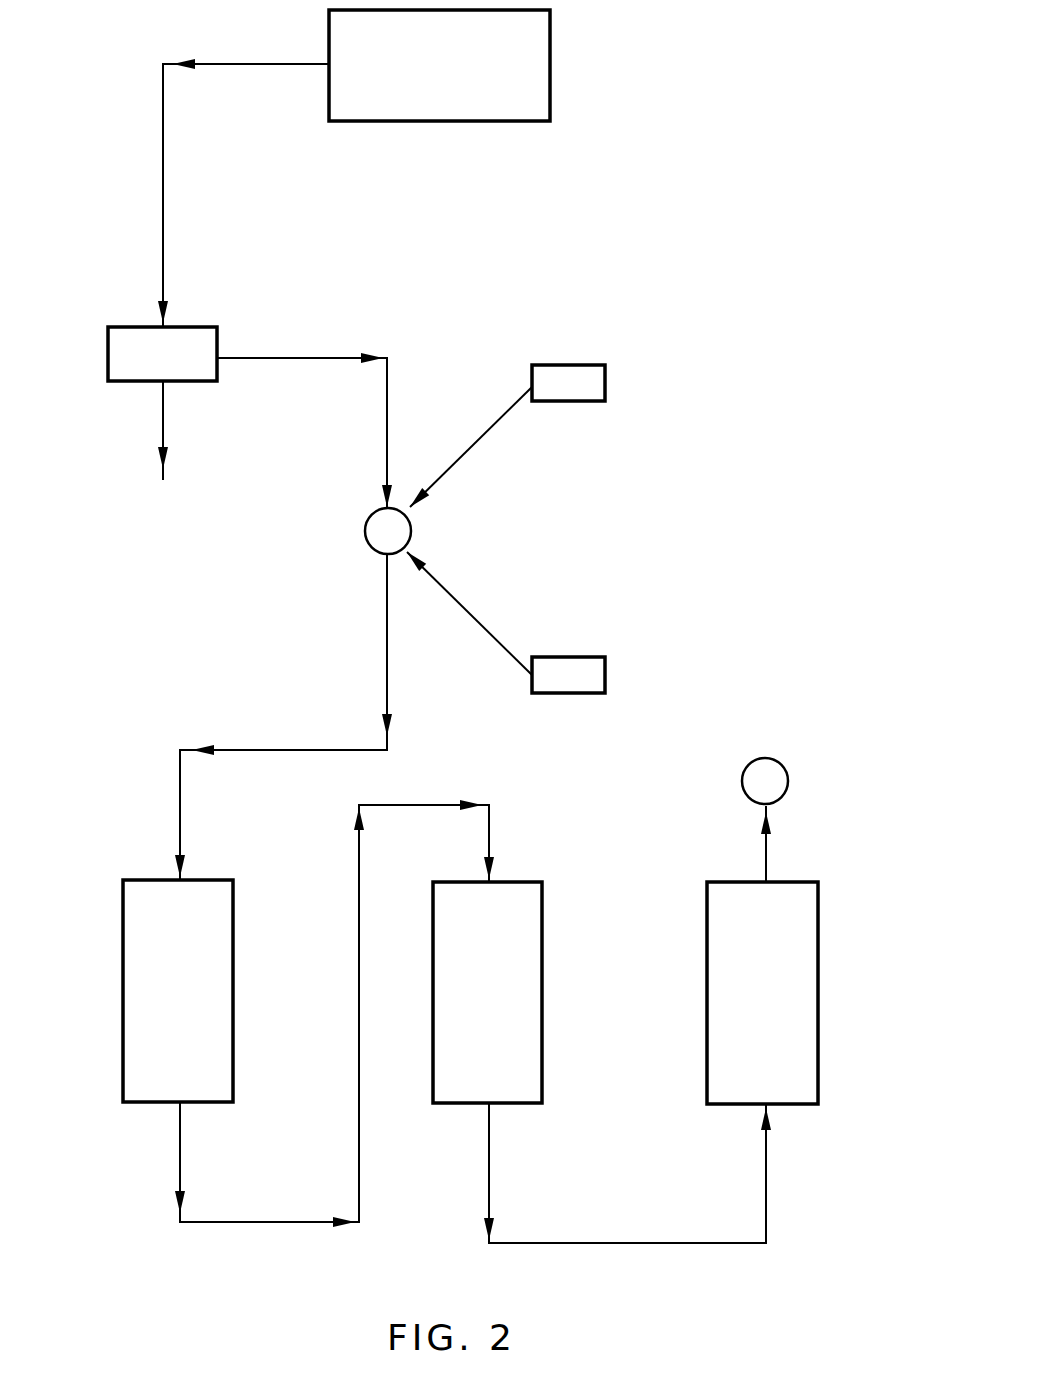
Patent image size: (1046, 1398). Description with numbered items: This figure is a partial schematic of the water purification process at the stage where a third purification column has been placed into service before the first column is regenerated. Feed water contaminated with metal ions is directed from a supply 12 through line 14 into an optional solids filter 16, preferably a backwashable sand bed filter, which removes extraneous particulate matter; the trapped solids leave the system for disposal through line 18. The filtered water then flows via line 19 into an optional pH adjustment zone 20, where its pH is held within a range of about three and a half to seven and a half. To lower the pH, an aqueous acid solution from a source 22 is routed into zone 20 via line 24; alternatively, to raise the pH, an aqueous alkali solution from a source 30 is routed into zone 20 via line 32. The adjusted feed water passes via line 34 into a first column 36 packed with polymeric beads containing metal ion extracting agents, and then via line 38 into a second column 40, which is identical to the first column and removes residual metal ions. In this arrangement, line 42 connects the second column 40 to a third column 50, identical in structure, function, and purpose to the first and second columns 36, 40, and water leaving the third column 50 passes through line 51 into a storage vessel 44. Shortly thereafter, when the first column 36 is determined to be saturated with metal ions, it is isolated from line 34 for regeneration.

The supply 12 is at (541, 18).
The line 14 is at (162, 118).
The solids filter 16 is at (197, 336).
The line 18 is at (165, 425).
The line 19 is at (389, 388).
The pH adjustment zone 20 is at (368, 532).
The source 22 is at (607, 383).
The line 24 is at (468, 447).
The source 30 is at (607, 678).
The line 32 is at (483, 630).
The line 34 is at (273, 747).
The first column 36 is at (130, 970).
The line 38 is at (360, 1168).
The second column 40 is at (523, 965).
The line 42 is at (583, 1241).
The storage vessel 44 is at (770, 762).
The third column 50 is at (810, 1020).
The line 51 is at (768, 846).